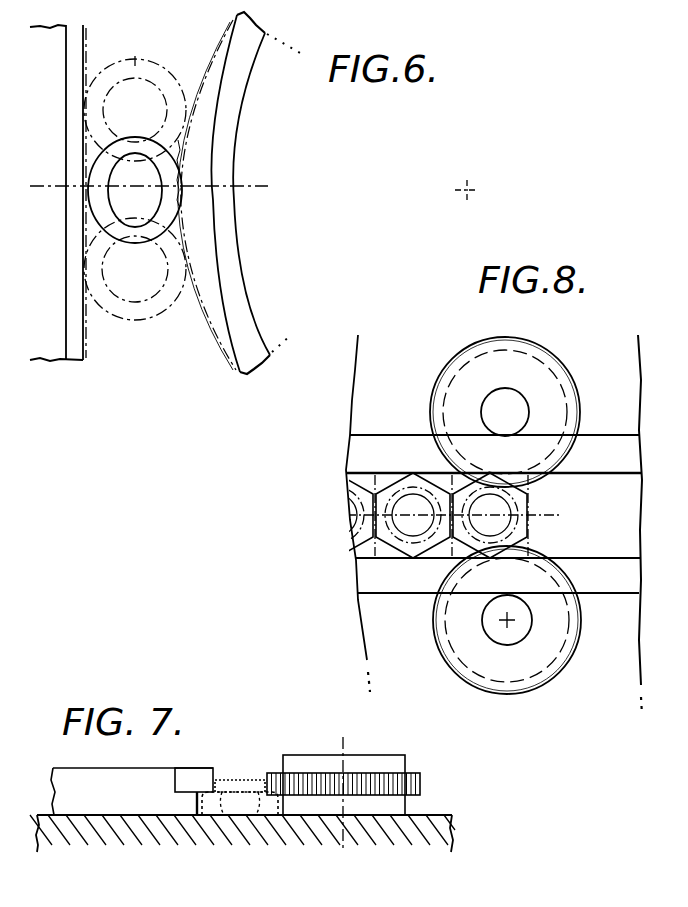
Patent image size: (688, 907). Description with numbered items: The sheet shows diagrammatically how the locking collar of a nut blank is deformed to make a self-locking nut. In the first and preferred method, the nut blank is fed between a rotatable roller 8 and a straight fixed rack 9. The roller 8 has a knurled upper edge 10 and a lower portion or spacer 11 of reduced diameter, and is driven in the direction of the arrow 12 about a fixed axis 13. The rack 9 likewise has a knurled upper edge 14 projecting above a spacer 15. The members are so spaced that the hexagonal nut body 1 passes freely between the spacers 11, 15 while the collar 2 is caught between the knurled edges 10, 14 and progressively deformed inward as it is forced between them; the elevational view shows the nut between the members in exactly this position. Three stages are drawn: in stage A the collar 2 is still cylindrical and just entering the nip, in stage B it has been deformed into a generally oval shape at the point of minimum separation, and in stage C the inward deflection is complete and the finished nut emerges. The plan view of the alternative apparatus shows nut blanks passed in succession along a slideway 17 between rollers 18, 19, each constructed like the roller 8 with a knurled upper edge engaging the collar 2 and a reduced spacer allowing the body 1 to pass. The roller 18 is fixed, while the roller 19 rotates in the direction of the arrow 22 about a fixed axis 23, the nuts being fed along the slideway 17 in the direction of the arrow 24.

In FIG. 6, the hexagonal nut body 1 is at (186, 173).
In FIG. 7, the hexagonal nut body 1 is at (245, 805).
In FIG. 6, the collar 2 is at (174, 178).
In FIG. 7, the collar 2 is at (242, 786).
In FIG. 6, the roller 8 is at (220, 88).
In FIG. 6, the rack 9 is at (57, 168).
In FIG. 7, the knurled upper edge 10 is at (300, 788).
In FIG. 7, the spacer 11 is at (332, 805).
In FIG. 6, the arrow 12 is at (233, 220).
In FIG. 6, the fixed axis 13 is at (466, 190).
In FIG. 7, the knurled upper edge 14 is at (191, 772).
In FIG. 7, the spacer 15 is at (128, 805).
In FIG. 8, the slideway 17 is at (365, 480).
In FIG. 8, the roller 18 is at (466, 383).
In FIG. 8, the roller 19 is at (487, 662).
In FIG. 8, the arrow 22 is at (528, 580).
In FIG. 8, the fixed axis 23 is at (503, 624).
In FIG. 8, the arrow 24 is at (623, 517).
In FIG. 6, the stage A is at (136, 56).
In FIG. 6, the stage B is at (90, 206).
In FIG. 6, the stage C is at (95, 270).